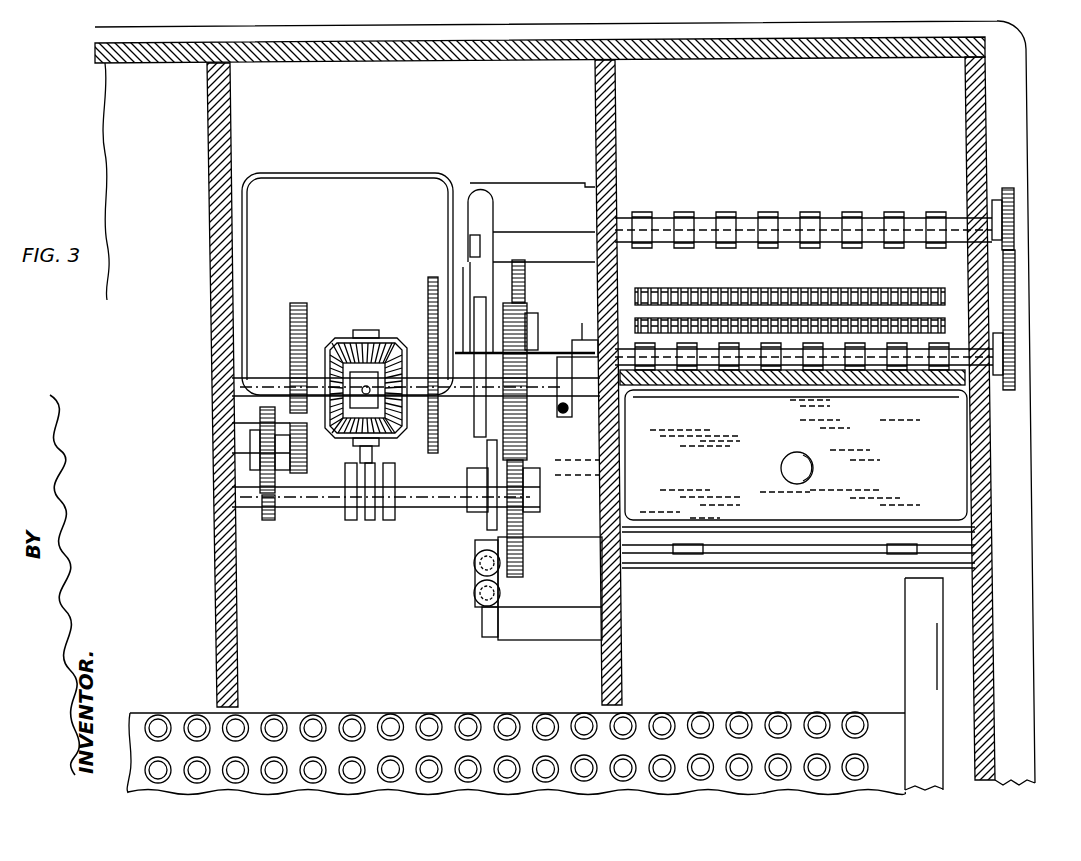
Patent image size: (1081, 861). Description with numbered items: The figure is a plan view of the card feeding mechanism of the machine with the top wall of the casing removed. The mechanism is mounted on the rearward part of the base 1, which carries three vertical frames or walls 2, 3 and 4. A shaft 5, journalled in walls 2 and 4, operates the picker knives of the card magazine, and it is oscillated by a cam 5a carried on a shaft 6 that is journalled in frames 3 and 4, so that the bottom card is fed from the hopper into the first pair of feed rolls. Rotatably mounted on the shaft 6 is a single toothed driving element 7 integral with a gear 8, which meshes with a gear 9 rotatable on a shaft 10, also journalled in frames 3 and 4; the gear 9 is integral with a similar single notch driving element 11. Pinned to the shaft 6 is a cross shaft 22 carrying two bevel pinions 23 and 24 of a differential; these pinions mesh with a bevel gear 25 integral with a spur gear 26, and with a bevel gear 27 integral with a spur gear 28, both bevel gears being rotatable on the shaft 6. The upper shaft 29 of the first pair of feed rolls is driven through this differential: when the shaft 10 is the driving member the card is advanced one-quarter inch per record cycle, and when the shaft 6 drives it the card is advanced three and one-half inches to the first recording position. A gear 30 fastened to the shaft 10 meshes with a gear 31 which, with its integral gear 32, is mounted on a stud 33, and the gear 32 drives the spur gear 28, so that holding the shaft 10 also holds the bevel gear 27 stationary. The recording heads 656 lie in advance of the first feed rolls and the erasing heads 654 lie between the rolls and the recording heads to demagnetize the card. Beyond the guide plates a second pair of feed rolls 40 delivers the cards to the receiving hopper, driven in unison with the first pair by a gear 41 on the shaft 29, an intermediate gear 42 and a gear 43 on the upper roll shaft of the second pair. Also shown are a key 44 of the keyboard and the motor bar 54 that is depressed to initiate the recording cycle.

The base 1 is at (1020, 117).
The vertical frame or wall 2 is at (985, 156).
The vertical frame or wall 3 is at (217, 637).
The vertical frame or wall 4 is at (622, 684).
The shaft 5 is at (628, 455).
The cam 5a is at (565, 357).
The shaft 6 is at (470, 402).
The single toothed driving element 7 is at (485, 425).
The gear 8 is at (520, 436).
The gear 9 is at (522, 560).
The shaft 10 is at (462, 497).
The single notch driving element 11 is at (490, 522).
The cross shaft 22 is at (366, 330).
The bevel pinion 23 is at (382, 338).
The bevel pinion 24 is at (395, 440).
The bevel gear 25 is at (372, 383).
The spur gear 26 is at (433, 277).
The bevel gear 27 is at (330, 350).
The spur gear 28 is at (290, 313).
The upper shaft of first pair of feed rolls 29 is at (583, 345).
The gear 30 is at (266, 520).
The gear 31 is at (262, 425).
The gear 32 is at (306, 458).
The stud 33 is at (258, 478).
The second pair of feed rolls 40 is at (845, 212).
The gear 41 is at (1013, 360).
The intermediate gear 42 is at (1018, 300).
The gear 43 is at (1014, 230).
The key 44 is at (742, 715).
The motor bar 54 is at (905, 630).
The erasing heads 654 is at (636, 330).
The recording heads 656 is at (863, 290).